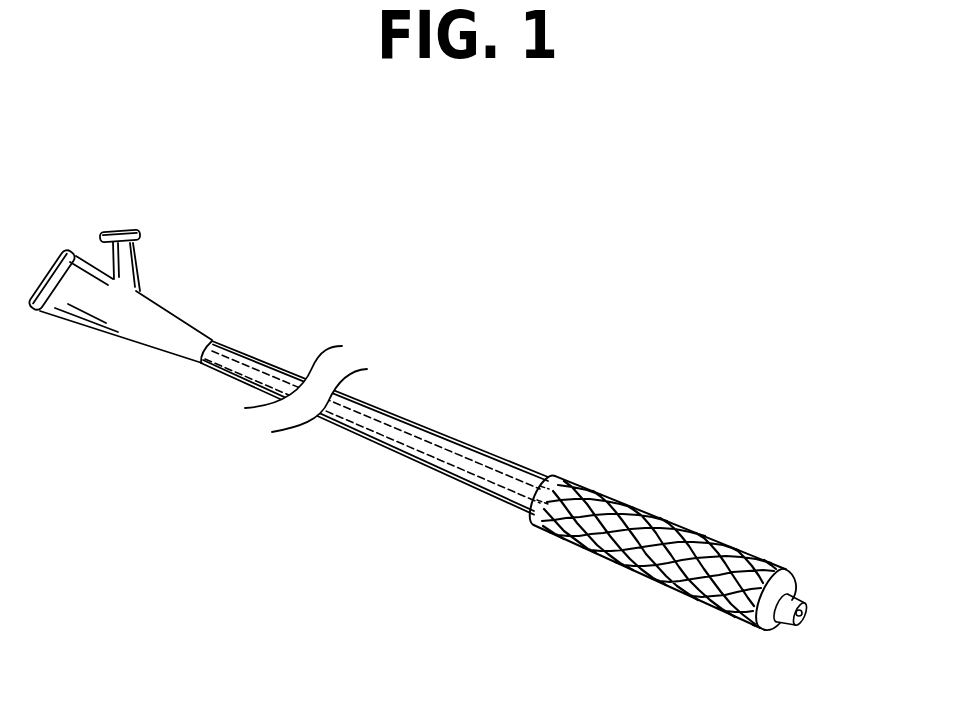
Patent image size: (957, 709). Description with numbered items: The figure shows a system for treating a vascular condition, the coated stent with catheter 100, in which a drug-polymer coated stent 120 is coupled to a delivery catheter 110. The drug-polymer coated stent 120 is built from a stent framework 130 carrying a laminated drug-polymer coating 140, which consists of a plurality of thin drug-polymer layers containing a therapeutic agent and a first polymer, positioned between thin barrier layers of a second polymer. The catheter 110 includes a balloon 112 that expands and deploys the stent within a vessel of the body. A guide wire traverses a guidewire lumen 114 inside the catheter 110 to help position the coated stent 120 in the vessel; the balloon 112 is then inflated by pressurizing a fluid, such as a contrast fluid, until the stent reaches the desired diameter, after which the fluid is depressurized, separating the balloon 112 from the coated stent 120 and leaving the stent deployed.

The coated stent with catheter 100 is at (100, 156).
The delivery catheter 110 is at (252, 357).
The drug-polymer coated stent 120 is at (662, 527).
The stent framework 130 is at (677, 523).
The laminated drug-polymer coating 140 is at (747, 558).
The balloon 112 is at (780, 578).
The guidewire lumen 114 is at (801, 612).